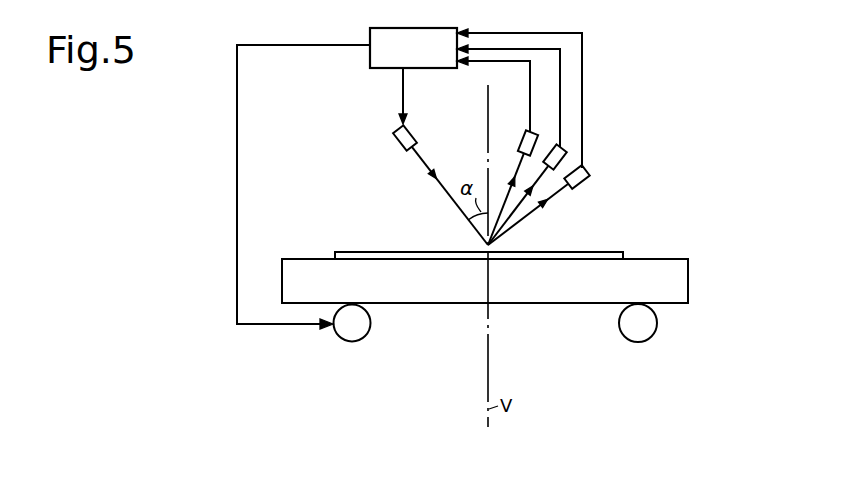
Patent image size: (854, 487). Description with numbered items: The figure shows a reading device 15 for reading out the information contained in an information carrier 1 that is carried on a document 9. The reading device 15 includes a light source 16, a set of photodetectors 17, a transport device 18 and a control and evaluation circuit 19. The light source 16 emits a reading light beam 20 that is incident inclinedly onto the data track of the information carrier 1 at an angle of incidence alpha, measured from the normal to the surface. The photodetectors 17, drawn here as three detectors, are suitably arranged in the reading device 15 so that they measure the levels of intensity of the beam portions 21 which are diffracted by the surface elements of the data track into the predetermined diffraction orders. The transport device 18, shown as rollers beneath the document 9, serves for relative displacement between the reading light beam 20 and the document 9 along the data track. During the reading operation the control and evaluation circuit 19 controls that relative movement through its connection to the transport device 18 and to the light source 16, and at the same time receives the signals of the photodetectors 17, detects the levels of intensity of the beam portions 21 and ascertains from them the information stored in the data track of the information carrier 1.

The information carrier 1 is at (348, 252).
The document 9 is at (688, 281).
The reading device 15 is at (195, 190).
The light source 16 is at (395, 132).
The photodetectors 17 is at (533, 132).
The transport device 18 is at (356, 331).
The control and evaluation circuit 19 is at (457, 40).
The reading light beam 20 is at (449, 198).
The beam portions 21 is at (514, 202).